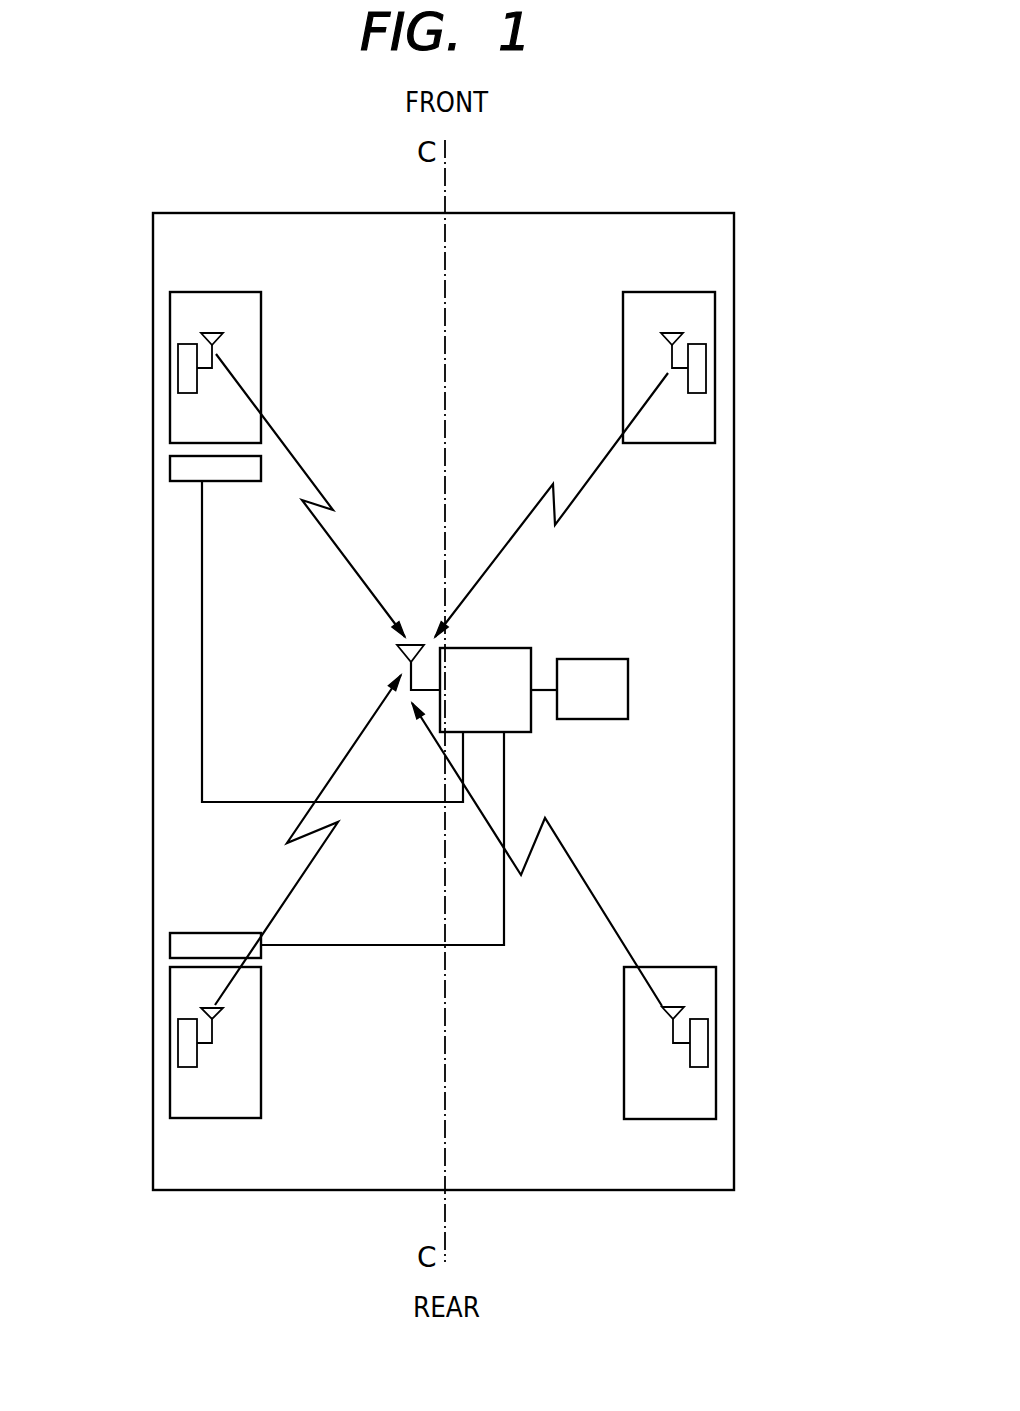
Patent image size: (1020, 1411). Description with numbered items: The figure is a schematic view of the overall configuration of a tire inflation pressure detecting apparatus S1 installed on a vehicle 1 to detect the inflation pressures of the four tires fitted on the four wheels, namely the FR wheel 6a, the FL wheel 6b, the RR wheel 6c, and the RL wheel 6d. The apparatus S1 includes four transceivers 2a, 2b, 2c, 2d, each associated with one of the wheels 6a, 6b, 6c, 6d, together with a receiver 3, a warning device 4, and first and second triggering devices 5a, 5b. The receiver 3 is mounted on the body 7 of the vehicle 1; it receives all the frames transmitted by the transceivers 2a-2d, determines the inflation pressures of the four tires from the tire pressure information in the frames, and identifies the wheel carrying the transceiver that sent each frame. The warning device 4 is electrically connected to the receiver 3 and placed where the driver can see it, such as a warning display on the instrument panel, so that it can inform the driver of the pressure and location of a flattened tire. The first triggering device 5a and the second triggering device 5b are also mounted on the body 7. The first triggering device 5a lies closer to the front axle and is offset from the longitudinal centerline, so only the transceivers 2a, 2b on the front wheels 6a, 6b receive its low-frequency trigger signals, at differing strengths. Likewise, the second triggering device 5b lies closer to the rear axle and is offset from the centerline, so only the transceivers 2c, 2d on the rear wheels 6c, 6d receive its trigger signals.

The tire inflation pressure detecting apparatus S1 is at (229, 174).
The vehicle 1 is at (630, 198).
The transceiver 2a is at (699, 344).
The transceiver 2b is at (183, 344).
The transceiver 2c is at (697, 1067).
The transceiver 2d is at (184, 1067).
The receiver 3 is at (492, 648).
The warning device 4 is at (593, 719).
The first triggering device 5a is at (170, 470).
The second triggering device 5b is at (170, 946).
The FR wheel 6a is at (669, 292).
The FL wheel 6b is at (216, 292).
The RR wheel 6c is at (671, 1119).
The RL wheel 6d is at (217, 1118).
The body 7 is at (735, 628).